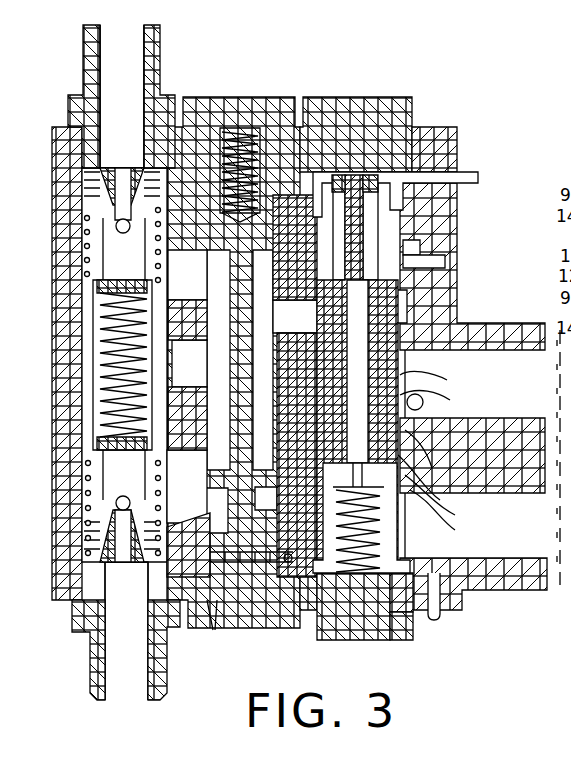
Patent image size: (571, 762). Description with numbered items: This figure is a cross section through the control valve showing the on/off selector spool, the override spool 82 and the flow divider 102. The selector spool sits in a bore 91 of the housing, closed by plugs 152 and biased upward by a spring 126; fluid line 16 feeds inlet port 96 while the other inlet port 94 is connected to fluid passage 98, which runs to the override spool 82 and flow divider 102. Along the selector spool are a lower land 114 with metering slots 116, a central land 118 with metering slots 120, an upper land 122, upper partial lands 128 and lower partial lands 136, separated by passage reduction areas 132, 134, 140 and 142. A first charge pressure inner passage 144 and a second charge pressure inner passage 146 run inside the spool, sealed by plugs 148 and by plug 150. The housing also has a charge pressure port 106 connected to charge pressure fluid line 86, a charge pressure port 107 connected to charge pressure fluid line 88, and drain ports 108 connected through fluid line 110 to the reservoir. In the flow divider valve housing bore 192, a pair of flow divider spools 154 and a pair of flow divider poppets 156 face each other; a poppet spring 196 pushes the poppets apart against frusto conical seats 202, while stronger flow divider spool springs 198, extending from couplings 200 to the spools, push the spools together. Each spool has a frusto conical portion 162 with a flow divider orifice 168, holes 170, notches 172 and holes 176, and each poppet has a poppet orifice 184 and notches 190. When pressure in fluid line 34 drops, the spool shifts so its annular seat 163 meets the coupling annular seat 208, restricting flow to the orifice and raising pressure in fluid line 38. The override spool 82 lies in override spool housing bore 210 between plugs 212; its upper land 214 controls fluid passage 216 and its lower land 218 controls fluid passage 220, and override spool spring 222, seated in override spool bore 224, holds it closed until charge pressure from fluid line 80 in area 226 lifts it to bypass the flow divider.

The fluid line 16 is at (552, 585).
The fluid line 34 is at (123, 37).
The fluid line 38 is at (130, 685).
The fluid line 80 is at (312, 640).
The override spool 82 is at (305, 172).
The charge pressure fluid line 86 is at (470, 172).
The charge pressure fluid line 88 is at (441, 617).
The bore 91 is at (440, 238).
The inlet port 94 is at (525, 397).
The inlet port 96 is at (533, 530).
The fluid passage 98 is at (305, 327).
The flow divider 102 is at (80, 278).
The charge pressure port 106 is at (432, 176).
The charge pressure port 107 is at (445, 598).
The drain ports 108 is at (445, 262).
The fluid line 110 is at (452, 262).
The lower land 114 is at (445, 530).
The metering slots 116 is at (440, 510).
The central land 118 is at (405, 358).
The metering slots 120 is at (400, 320).
The upper land 122 is at (440, 215).
The spring 126 is at (388, 640).
The upper partial lands 128 is at (445, 284).
The passage reduction area 132 is at (403, 262).
The passage reduction area 134 is at (447, 293).
The lower partial lands 136 is at (418, 455).
The passage reduction area 140 is at (380, 385).
The passage reduction area 142 is at (440, 490).
The first charge pressure inner passage 144 is at (410, 380).
The second charge pressure inner passage 146 is at (338, 208).
The plugs 148 is at (370, 180).
The plug 150 is at (360, 640).
The plugs 152 is at (390, 100).
The flow divider spools 154 is at (70, 225).
The flow divider poppets 156 is at (92, 282).
The frusto conical portion 162 is at (135, 120).
The annular seat 163 is at (84, 535).
The flow divider orifice 168 is at (125, 576).
The holes 170 is at (96, 312).
The notches 172 is at (100, 360).
The holes 176 is at (123, 236).
The poppet orifice 184 is at (84, 258).
The notches 190 is at (88, 345).
The flow divider valve housing bore 192 is at (90, 405).
The poppet spring 196 is at (190, 272).
The flow divider spool springs 198 is at (84, 172).
The couplings 200 is at (78, 0).
The frusto conical seats 202 is at (96, 300).
The coupling annular seat 208 is at (190, 140).
The override spool housing bore 210 is at (258, 628).
The plugs 212 is at (236, 98).
The upper land 214 is at (305, 240).
The fluid passage 216 is at (185, 240).
The lower land 218 is at (295, 445).
The fluid passage 220 is at (185, 500).
The override spool spring 222 is at (245, 135).
The override spool bore 224 is at (235, 212).
The area 226 is at (213, 625).